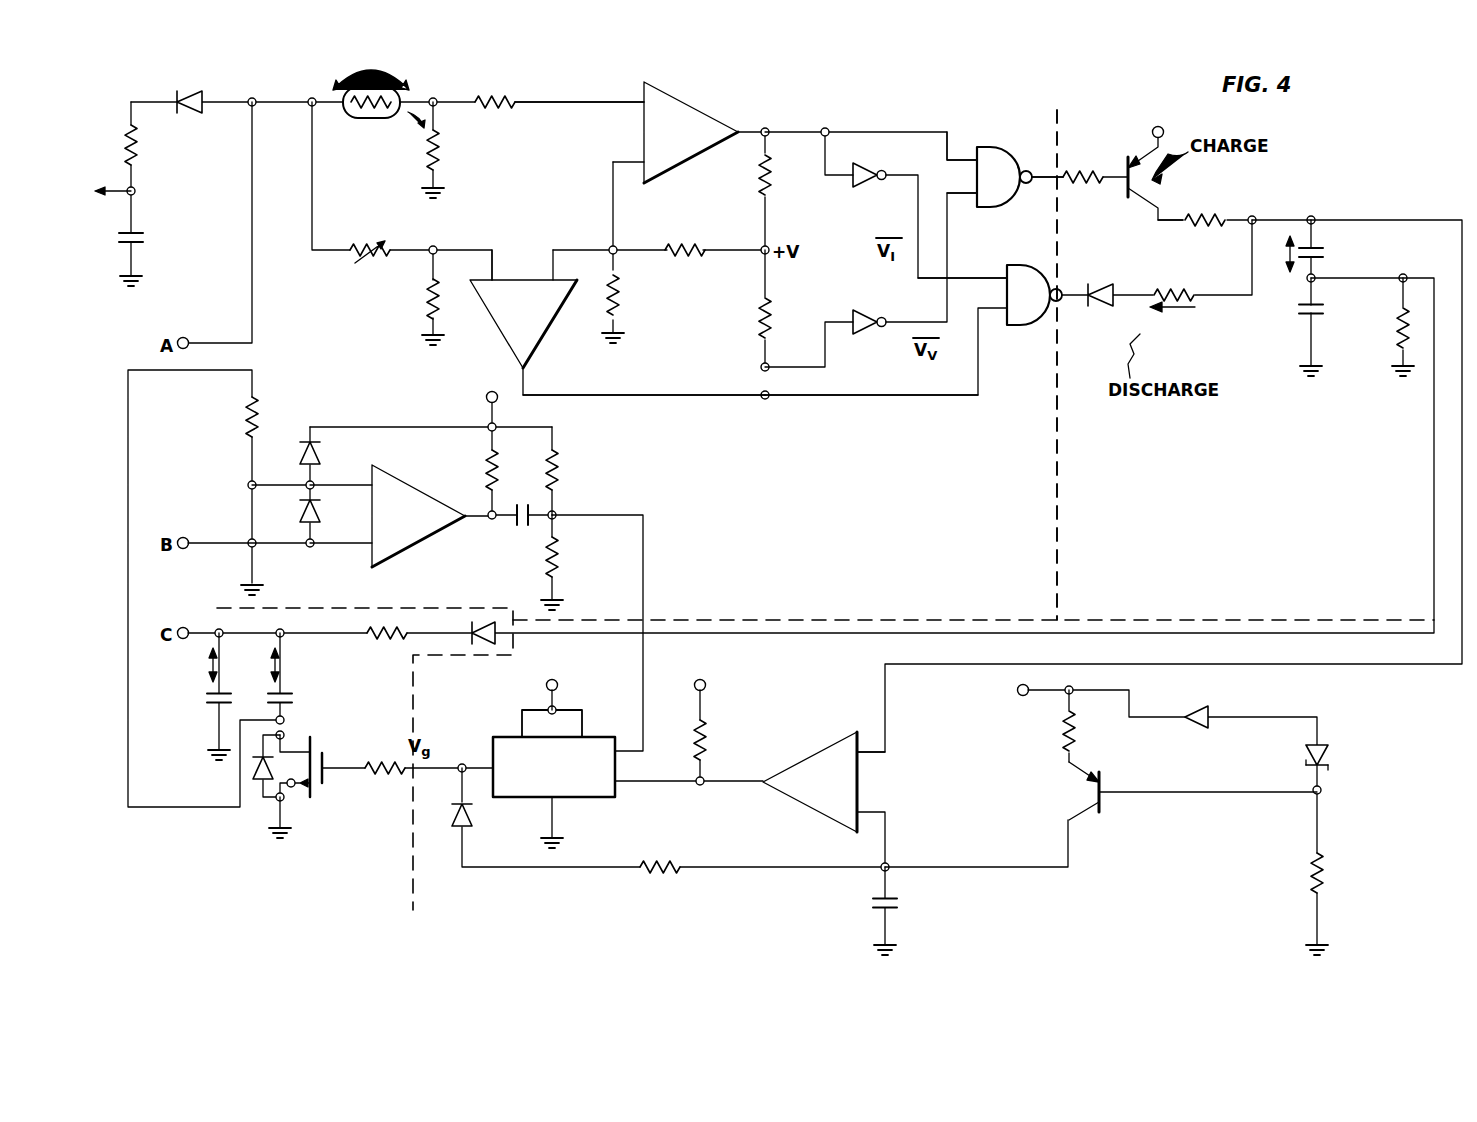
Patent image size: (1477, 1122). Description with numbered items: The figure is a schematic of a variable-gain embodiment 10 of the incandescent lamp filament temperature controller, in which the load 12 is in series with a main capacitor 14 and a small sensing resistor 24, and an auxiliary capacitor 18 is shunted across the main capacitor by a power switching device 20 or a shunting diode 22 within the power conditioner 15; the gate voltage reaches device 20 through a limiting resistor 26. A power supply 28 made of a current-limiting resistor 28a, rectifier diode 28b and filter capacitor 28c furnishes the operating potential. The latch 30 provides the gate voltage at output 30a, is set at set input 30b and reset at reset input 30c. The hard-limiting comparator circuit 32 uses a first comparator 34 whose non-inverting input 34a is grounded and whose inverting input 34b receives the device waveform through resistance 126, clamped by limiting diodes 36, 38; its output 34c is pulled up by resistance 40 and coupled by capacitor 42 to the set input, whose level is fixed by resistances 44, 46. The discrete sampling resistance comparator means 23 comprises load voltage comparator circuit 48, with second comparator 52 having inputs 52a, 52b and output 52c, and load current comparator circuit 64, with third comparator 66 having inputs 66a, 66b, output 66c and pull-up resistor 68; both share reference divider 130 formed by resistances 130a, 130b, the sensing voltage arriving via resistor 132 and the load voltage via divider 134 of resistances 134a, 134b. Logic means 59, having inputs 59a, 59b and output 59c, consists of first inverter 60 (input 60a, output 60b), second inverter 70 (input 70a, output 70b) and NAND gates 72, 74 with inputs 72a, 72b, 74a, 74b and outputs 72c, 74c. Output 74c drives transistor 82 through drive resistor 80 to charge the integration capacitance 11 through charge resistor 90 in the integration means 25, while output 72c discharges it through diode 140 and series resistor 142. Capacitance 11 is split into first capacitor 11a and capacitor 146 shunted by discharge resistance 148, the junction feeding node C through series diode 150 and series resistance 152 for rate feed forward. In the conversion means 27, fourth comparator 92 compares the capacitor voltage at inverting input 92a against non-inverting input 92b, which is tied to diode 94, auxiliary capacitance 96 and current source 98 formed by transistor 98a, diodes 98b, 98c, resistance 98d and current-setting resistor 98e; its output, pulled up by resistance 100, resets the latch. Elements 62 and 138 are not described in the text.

The load parameter control circuit 10 is at (179, 588).
The integration capacitance 11 is at (964, 426).
The first capacitor 11a is at (1326, 256).
The load 12 is at (348, 120).
The main capacitor 14 is at (206, 696).
The power conditioner or modulator means 15 is at (246, 804).
The auxiliary capacitor 18 is at (286, 688).
The power switching device 20 is at (310, 785).
The shunting diode 22 is at (250, 768).
The discrete sampling resistance comparator means 23 is at (819, 530).
The sensing resistor 24 is at (410, 168).
The integration means 25 is at (1132, 365).
The limiting resistor 26 is at (374, 764).
The integral-to-control signal conversion means 27 is at (823, 653).
The logic operating potential power supply 28 is at (153, 164).
The current-limiting resistor 28a is at (185, 84).
The rectifier diode 28b is at (130, 130).
The filter capacitor 28c is at (125, 246).
The reset-set latch 30 is at (571, 681).
The latch output 30a is at (456, 774).
The set S input 30b is at (636, 700).
The reset R input 30c is at (642, 788).
The hard-limiting comparator circuit 32 is at (382, 582).
The first comparator 34 is at (391, 509).
The non-inverting input 34a is at (336, 543).
The inverting input 34b is at (354, 486).
The comparator output 34c is at (468, 514).
The limiting diode 36 is at (316, 512).
The limiting diode 38 is at (300, 444).
The resistance 40 is at (498, 478).
The coupling capacitor 42 is at (510, 526).
The first resistance 44 is at (558, 458).
The second resistance 46 is at (564, 564).
The load voltage comparator circuit 48 is at (582, 318).
The second comparator 52 is at (617, 318).
The non-inverting input 52a is at (486, 260).
The inverting input 52b is at (538, 292).
The second comparator output 52c is at (523, 385).
The logic means 59 is at (979, 404).
The first input 59a is at (756, 398).
The second logic means input 59b is at (789, 128).
The logic means output 59c is at (1277, 227).
The first inverter 60 is at (871, 290).
The inverter input 60a is at (836, 336).
The first inverter output 60b is at (914, 324).
The resistor 62 is at (762, 322).
The load current comparator circuit 64 is at (600, 147).
The third comparator 66 is at (640, 109).
The inverting input 66a is at (620, 157).
The non-inverting input 66b is at (610, 100).
The third comparator output 66c is at (748, 135).
The resistor 68 is at (760, 179).
The second inverter 70 is at (898, 179).
The inverter input 70a is at (836, 150).
The inverter output 70b is at (901, 158).
The NAND gate 72 is at (933, 316).
The gate input 72a is at (987, 320).
The gate input 72b is at (986, 280).
The gate output 72c is at (1070, 298).
The NAND gate 74 is at (1006, 171).
The gate input 74a is at (964, 202).
The gate input 74b is at (964, 144).
The gate output 74c is at (1038, 182).
The drive resistor 80 is at (1070, 162).
The second transistor 82 is at (1122, 190).
The charge resistor 90 is at (1208, 218).
The fourth comparator 92 is at (846, 799).
The inverting input 92a is at (874, 808).
The non-inverting input 92b is at (876, 752).
The diode 94 is at (452, 828).
The auxiliary capacitance 96 is at (906, 912).
The current source 98 is at (1153, 818).
The current source transistor 98a is at (1086, 794).
The diode 98b is at (1182, 722).
The diode 98c is at (1330, 748).
The resistance element 98d is at (1324, 856).
The current-setting resistor 98e is at (1054, 720).
The pull-up resistance 100 is at (704, 724).
The resistance 126 is at (242, 405).
The reference divider 130 is at (659, 275).
The first resistance 130a is at (676, 240).
The second resistance 130b is at (620, 292).
The resistor 132 is at (506, 90).
The voltage divider 134 is at (387, 229).
The first resistance 134a is at (425, 280).
The variable resistance 134b is at (362, 242).
The resistor 138 is at (658, 872).
The diode 140 is at (1112, 302).
The series resistor 142 is at (1174, 290).
The capacitor 146 is at (1296, 316).
The discharge resistance 148 is at (1396, 318).
The series diode 150 is at (492, 618).
The series resistance 152 is at (402, 622).